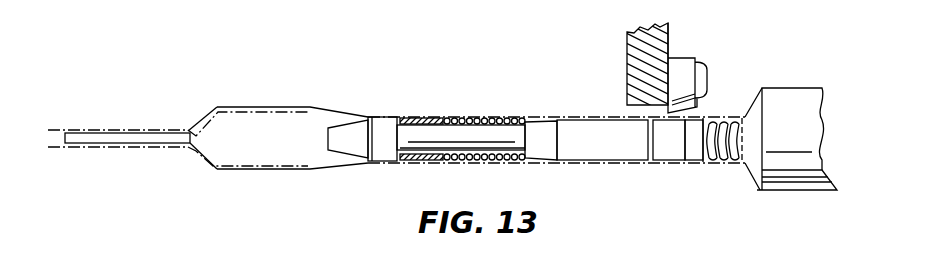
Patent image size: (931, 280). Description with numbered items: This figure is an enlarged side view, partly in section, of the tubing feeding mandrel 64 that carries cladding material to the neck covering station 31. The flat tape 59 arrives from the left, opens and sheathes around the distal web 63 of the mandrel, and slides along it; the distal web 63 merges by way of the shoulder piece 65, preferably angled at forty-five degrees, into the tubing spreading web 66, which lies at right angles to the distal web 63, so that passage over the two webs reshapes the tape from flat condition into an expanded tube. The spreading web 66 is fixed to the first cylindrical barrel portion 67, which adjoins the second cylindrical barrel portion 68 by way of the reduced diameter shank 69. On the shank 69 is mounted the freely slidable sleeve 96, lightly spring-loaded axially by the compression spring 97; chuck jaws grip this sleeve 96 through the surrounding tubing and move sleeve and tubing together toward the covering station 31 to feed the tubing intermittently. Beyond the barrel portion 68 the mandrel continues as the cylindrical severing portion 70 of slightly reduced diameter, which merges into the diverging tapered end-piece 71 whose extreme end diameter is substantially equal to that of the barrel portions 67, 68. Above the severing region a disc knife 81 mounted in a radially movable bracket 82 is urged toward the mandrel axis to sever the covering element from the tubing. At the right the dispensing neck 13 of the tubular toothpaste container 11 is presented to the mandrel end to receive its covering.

The tape 59 is at (55, 130).
The distal web 63 is at (147, 143).
The shoulder piece 65 is at (195, 155).
The tubing spreading web 66 is at (287, 120).
The first cylindrical barrel portion 67 is at (383, 127).
The sleeve 96 is at (428, 117).
The reduced diameter shank 69 is at (482, 132).
The compression spring 97 is at (503, 120).
The second cylindrical barrel portion 68 is at (610, 128).
The cylindrical severing portion 70 is at (668, 150).
The neck covering station 31 is at (704, 180).
The diverging tapered end-piece 71 is at (702, 117).
The dispensing neck 13 is at (724, 163).
The tubular toothpaste container 11 is at (788, 118).
The radially movable bracket 82 is at (647, 33).
The disc knife 81 is at (670, 68).
The feed mandrel 64 is at (369, 180).